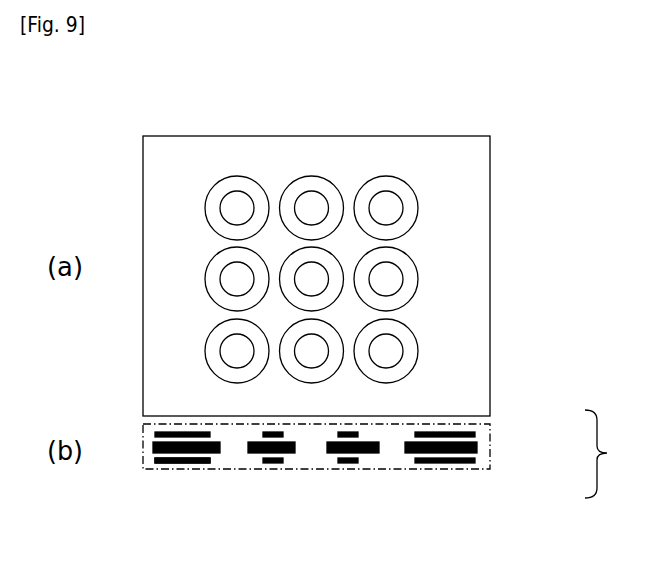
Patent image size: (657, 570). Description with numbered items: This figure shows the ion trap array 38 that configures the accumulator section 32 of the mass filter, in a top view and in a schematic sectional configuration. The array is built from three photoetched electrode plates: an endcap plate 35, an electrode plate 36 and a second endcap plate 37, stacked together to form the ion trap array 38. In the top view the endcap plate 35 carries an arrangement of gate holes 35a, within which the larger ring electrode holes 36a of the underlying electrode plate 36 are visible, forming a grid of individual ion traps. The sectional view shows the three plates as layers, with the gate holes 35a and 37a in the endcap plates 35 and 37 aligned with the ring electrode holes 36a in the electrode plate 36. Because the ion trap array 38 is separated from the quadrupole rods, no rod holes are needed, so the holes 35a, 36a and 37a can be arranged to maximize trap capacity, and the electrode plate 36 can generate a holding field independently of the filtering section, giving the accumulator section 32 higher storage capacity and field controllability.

The accumulator section 32 is at (136, 347).
The endcap plate 35 is at (475, 192).
The electrode plate 36 is at (473, 447).
The endcap plate 37 is at (473, 461).
The ion trap array 38 is at (611, 454).
The gate hole 35a is at (385, 187).
The ring electrode hole 36a is at (233, 185).
The gate hole 37a is at (210, 462).